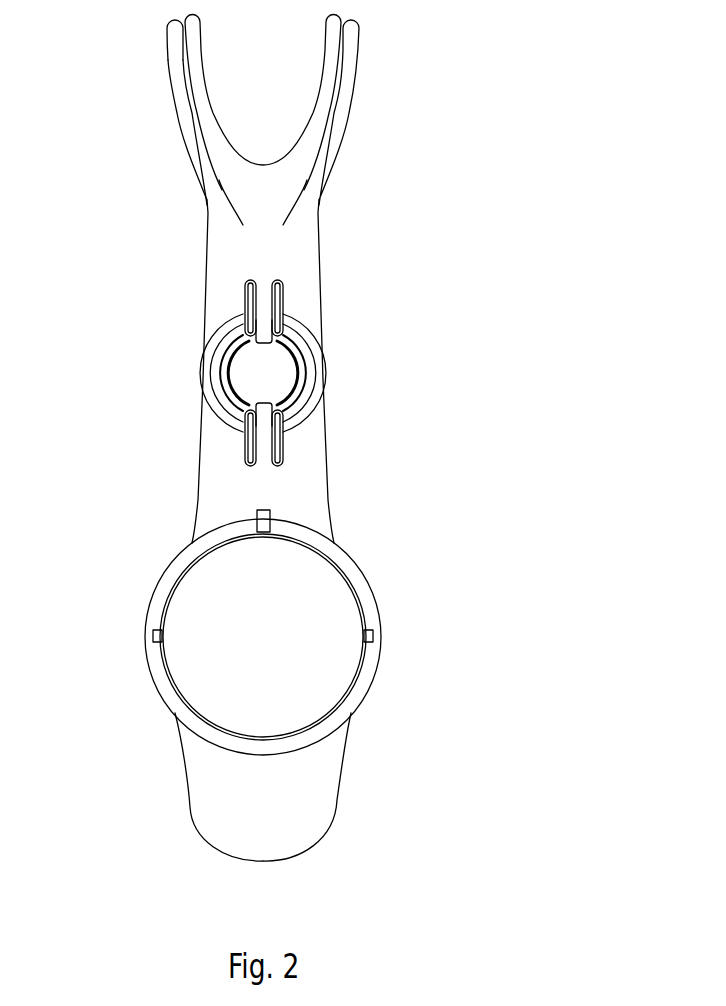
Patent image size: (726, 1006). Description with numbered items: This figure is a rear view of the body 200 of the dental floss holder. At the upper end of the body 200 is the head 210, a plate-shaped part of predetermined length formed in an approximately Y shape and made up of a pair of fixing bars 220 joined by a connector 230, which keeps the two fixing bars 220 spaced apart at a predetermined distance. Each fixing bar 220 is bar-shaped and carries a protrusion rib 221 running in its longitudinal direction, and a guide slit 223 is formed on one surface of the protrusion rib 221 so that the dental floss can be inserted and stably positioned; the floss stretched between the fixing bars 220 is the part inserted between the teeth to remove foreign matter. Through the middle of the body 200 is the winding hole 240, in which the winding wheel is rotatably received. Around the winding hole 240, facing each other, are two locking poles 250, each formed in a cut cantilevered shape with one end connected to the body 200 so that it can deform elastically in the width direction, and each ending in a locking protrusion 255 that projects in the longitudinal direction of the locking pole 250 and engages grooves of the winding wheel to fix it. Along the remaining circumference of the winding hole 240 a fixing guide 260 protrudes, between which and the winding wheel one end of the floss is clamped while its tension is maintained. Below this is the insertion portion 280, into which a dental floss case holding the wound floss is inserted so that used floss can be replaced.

The body 200 is at (448, 278).
The head 210 is at (433, 185).
The fixing bar 220 is at (180, 98).
The protrusion rib 221 is at (358, 52).
The guide slit 223 is at (180, 50).
The connector 230 is at (260, 212).
The winding hole 240 is at (368, 393).
The locking pole 250 is at (262, 447).
The locking protrusion 255 is at (282, 430).
The fixing guide 260 is at (213, 370).
The insertion portion 280 is at (438, 680).